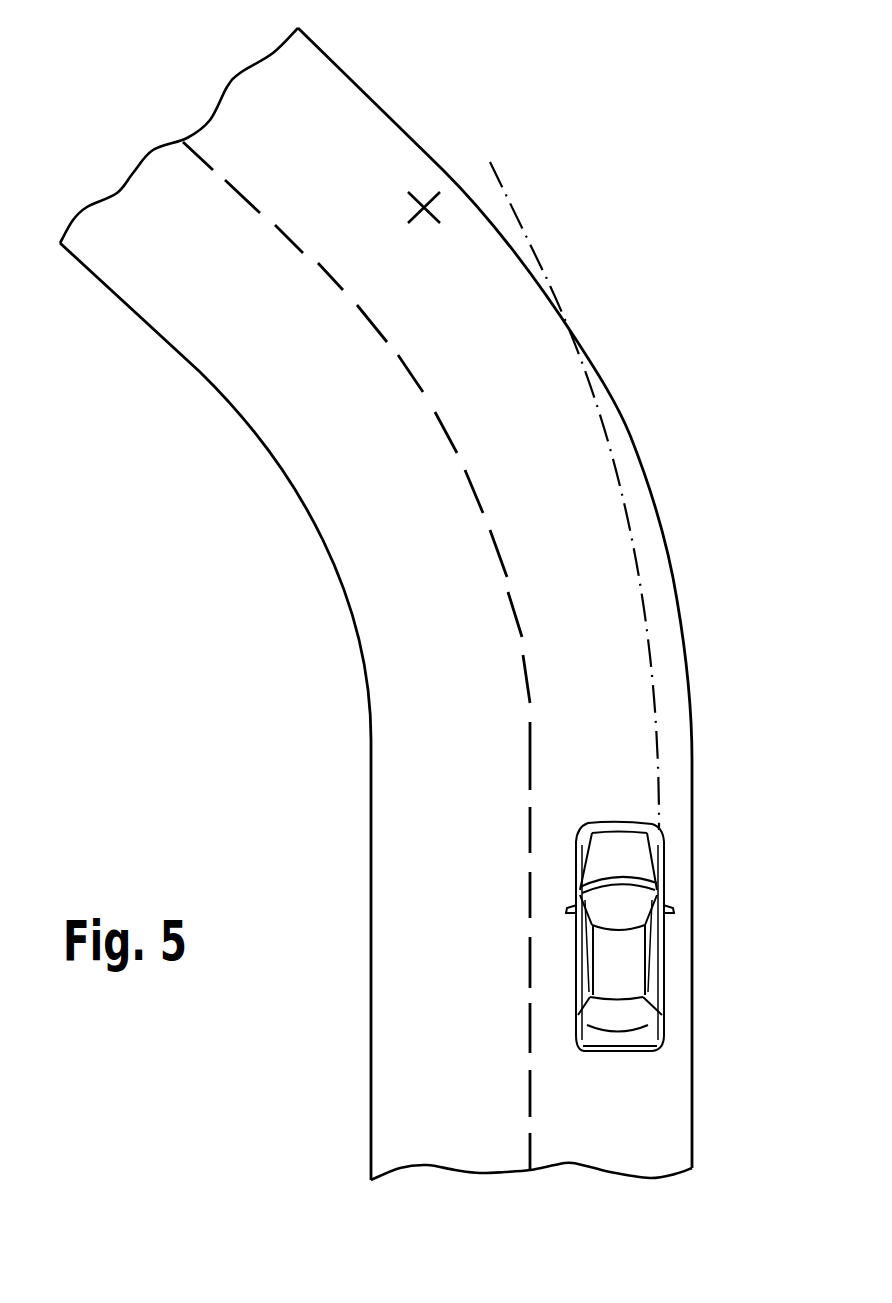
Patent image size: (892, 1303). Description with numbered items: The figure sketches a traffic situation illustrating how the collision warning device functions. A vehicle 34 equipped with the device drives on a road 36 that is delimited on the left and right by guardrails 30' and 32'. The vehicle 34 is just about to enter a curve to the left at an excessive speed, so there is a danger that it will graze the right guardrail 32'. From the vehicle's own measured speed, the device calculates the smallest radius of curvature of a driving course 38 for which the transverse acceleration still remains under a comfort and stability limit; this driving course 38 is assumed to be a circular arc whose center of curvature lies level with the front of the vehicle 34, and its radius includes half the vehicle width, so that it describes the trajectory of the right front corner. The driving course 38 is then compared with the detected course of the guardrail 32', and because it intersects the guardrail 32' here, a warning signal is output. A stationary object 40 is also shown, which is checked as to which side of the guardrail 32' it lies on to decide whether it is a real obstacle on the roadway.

The guardrail 30' is at (215, 711).
The guardrail 32' is at (530, 598).
The vehicle 34 is at (630, 950).
The road 36 is at (342, 458).
The driving course 38 is at (523, 220).
The stationary object 40 is at (410, 208).